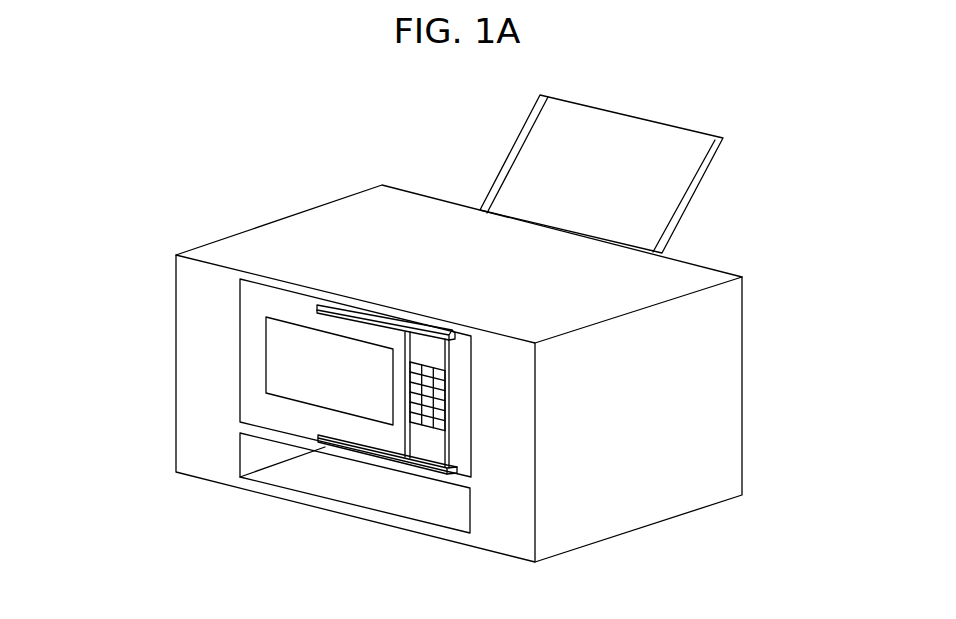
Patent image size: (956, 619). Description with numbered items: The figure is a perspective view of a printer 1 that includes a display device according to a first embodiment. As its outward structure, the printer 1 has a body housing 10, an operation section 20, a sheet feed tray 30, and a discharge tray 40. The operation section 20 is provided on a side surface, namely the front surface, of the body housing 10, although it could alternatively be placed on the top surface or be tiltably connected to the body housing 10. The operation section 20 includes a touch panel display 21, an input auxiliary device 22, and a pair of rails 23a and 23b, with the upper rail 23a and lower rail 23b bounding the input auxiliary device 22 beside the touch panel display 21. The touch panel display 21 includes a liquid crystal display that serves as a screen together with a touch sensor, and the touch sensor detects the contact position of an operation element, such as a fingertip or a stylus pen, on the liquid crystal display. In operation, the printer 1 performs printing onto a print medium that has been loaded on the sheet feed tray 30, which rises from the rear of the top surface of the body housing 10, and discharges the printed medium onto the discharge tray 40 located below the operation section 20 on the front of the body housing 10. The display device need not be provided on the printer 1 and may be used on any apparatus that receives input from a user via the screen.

The printer 1 is at (324, 89).
The body housing 10 is at (742, 380).
The operation section 20 is at (240, 317).
The touch panel display 21 is at (266, 377).
The input auxiliary device 22 is at (446, 404).
The rail 23a is at (321, 304).
The rail 23b is at (345, 450).
The sheet feed tray 30 is at (504, 158).
The discharge tray 40 is at (240, 443).